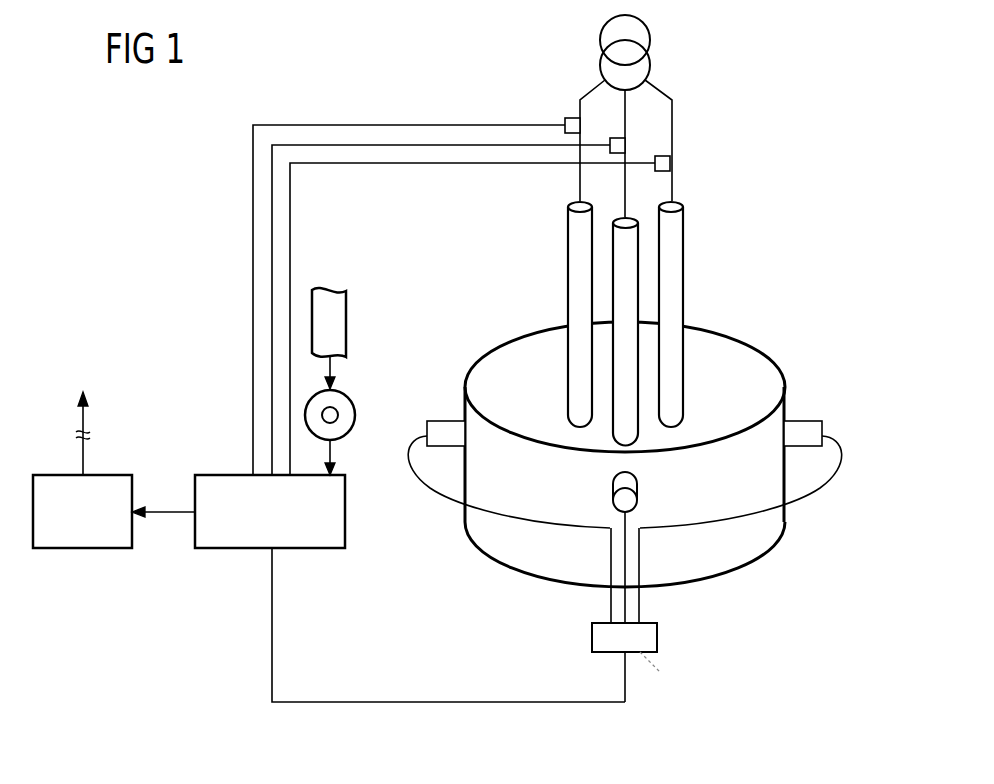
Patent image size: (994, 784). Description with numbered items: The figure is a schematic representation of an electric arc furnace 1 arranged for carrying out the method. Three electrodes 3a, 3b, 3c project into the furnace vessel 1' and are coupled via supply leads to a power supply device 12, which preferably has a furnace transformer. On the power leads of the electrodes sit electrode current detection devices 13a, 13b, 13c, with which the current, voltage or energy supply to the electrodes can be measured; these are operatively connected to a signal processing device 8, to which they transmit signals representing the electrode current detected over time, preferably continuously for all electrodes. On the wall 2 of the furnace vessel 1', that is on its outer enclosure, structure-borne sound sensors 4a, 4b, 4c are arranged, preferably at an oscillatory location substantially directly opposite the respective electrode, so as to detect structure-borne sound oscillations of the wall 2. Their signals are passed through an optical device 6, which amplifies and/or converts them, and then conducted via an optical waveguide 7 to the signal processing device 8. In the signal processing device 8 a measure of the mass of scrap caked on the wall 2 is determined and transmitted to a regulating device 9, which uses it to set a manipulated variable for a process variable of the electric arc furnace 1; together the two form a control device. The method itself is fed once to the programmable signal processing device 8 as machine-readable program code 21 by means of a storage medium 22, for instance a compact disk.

The electric arc furnace 1 is at (624, 412).
The furnace vessel 1' is at (642, 374).
The wall 2 is at (740, 546).
The electrode 3a is at (575, 236).
The electrode 3b is at (683, 233).
The electrode 3c is at (618, 258).
The structure-borne sound sensor 4a is at (440, 421).
The structure-borne sound sensor 4b is at (808, 421).
The structure-borne sound sensor 4c is at (638, 490).
The optical device 6 is at (657, 640).
The optical waveguide 7 is at (447, 702).
The signal processing device 8 is at (240, 548).
The regulating device 9 is at (83, 548).
The power supply device 12 is at (655, 63).
The electrode current detection device 13a is at (568, 118).
The electrode current detection device 13b is at (670, 163).
The electrode current detection device 13c is at (625, 145).
The machine-readable program code 21 is at (346, 300).
The storage medium 22 is at (350, 400).